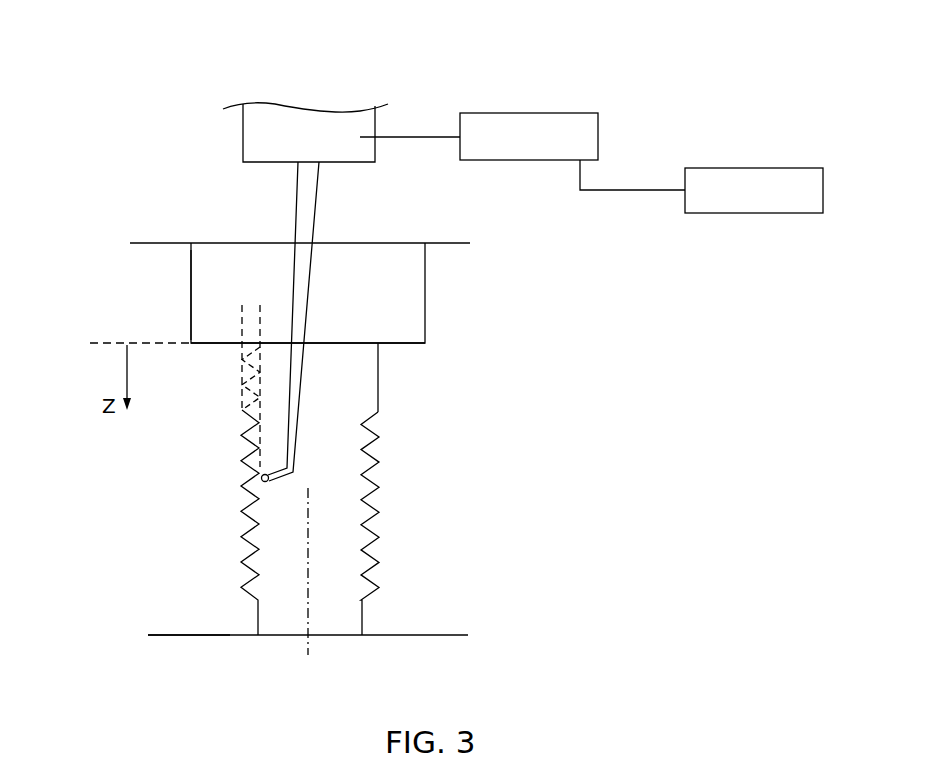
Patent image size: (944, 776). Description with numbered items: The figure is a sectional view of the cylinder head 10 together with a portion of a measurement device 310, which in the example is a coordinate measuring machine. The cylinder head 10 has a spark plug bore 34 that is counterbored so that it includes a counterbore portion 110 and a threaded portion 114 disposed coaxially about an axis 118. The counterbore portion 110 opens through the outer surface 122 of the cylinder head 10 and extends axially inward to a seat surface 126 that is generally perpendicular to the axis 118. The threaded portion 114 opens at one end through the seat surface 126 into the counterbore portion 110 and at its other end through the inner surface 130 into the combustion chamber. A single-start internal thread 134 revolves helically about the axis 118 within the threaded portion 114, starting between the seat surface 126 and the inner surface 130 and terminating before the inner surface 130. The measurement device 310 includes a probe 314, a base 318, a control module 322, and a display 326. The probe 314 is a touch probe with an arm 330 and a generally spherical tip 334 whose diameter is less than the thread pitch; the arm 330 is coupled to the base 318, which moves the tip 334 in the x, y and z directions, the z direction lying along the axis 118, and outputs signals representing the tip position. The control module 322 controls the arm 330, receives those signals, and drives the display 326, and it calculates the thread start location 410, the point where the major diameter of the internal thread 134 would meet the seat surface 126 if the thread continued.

The measurement device 310 is at (150, 155).
The base 318 is at (257, 140).
The control module 322 is at (600, 130).
The display 326 is at (762, 168).
The arm 330 is at (305, 225).
The tip 334 is at (260, 472).
The probe 314 is at (329, 262).
The outer surface 122 is at (455, 242).
The counterbore portion 110 is at (408, 302).
The seat surface 126 is at (415, 342).
The spark plug bore 34 is at (191, 293).
The thread start location 410 is at (242, 343).
The threaded portion 114 is at (370, 383).
The internal thread 134 is at (369, 569).
The inner surface 130 is at (443, 635).
The cylinder head 10 is at (203, 622).
The axis 118 is at (308, 658).